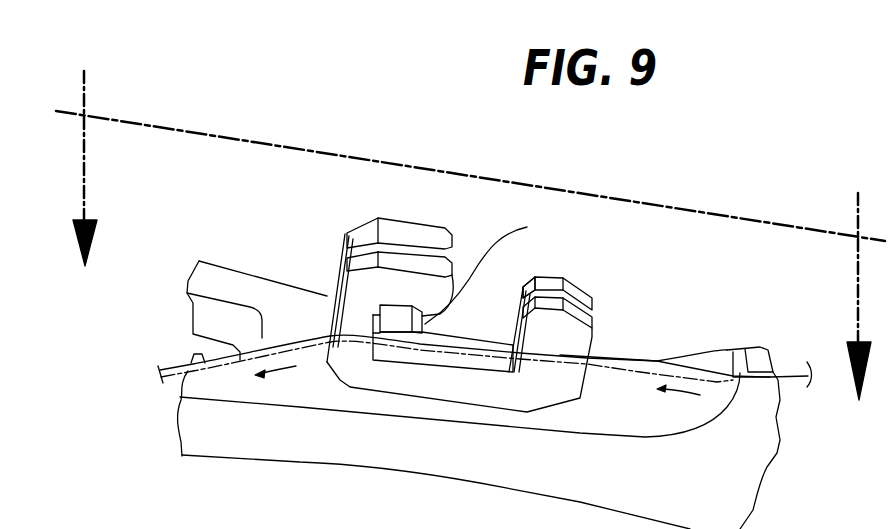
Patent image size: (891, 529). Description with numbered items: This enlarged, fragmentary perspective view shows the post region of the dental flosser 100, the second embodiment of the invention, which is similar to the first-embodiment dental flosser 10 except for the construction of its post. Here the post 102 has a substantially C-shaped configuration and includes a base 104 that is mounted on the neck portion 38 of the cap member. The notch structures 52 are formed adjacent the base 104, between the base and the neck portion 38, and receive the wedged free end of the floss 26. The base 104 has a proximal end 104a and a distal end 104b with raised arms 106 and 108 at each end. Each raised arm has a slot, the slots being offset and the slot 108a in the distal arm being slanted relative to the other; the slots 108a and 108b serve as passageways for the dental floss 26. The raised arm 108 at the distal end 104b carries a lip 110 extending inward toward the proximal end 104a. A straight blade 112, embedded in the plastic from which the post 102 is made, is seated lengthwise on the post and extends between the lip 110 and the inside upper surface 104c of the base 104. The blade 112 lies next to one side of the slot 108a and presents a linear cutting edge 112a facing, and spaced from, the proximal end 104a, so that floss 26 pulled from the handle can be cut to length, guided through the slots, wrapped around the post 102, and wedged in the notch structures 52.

The dental flosser 10 is at (470, 257).
The floss 26 is at (197, 352).
The neck portion 38 is at (440, 438).
The notch structures 52 is at (318, 384).
The dental flosser 100 is at (147, 400).
The post 102 is at (327, 214).
The base 104 is at (477, 350).
The proximal end 104a is at (578, 343).
The distal end 104b is at (357, 298).
The inside upper surface 104c is at (446, 359).
The raised arm 106 is at (581, 297).
The raised arm 108 is at (385, 225).
The slot 108a is at (425, 245).
The slot 108b is at (579, 273).
The lip 110 is at (500, 266).
The straight blade 112 is at (402, 318).
The linear cutting edge 112a is at (455, 302).